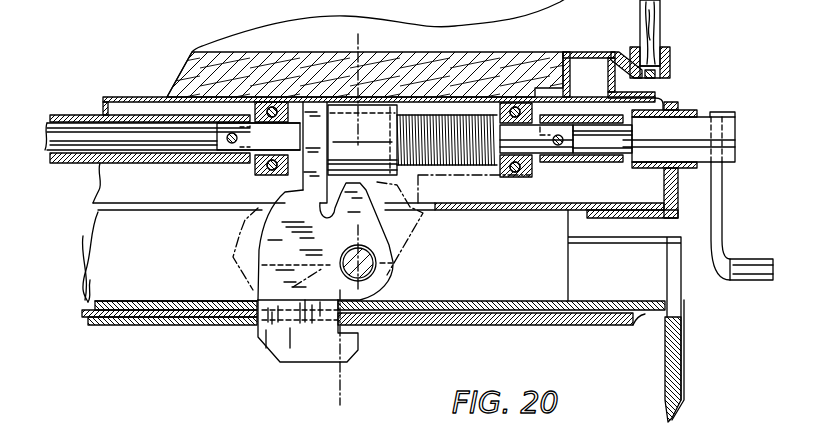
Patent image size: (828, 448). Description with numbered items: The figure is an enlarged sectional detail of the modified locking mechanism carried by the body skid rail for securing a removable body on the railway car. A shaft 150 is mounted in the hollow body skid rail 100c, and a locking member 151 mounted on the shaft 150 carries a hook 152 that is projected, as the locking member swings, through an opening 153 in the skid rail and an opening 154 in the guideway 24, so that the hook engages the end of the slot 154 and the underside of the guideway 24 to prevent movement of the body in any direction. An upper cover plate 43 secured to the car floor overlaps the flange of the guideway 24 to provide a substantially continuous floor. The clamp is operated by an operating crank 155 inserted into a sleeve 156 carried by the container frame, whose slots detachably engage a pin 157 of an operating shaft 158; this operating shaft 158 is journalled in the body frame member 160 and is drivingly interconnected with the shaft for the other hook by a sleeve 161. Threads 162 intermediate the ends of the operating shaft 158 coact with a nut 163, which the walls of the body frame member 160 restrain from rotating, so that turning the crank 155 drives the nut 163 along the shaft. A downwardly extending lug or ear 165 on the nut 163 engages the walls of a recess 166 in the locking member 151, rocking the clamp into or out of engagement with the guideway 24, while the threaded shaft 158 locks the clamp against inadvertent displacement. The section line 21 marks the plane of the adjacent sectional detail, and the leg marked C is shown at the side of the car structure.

The section line 21- 21 is at (358, 34).
The guideway 24 is at (83, 308).
The upper cover plate 43 is at (645, 243).
The hollow body skid rail 100c is at (373, 232).
The shaft 150 is at (383, 285).
The locking member 151 is at (313, 250).
The hook 152 is at (350, 342).
The opening in body skid rail 153 is at (238, 304).
The opening in guideway 154 is at (237, 322).
The operating crank 155 is at (718, 223).
The sleeve 156 is at (688, 110).
The pin 157 is at (562, 146).
The operating shaft 158 is at (531, 141).
The body frame member 160 is at (657, 92).
The sleeve 161 is at (167, 150).
The threads 162 is at (435, 163).
The nut 163 is at (362, 140).
The lug or ear 165 is at (272, 196).
The recess 166 is at (326, 172).
The leg member C is at (676, 380).